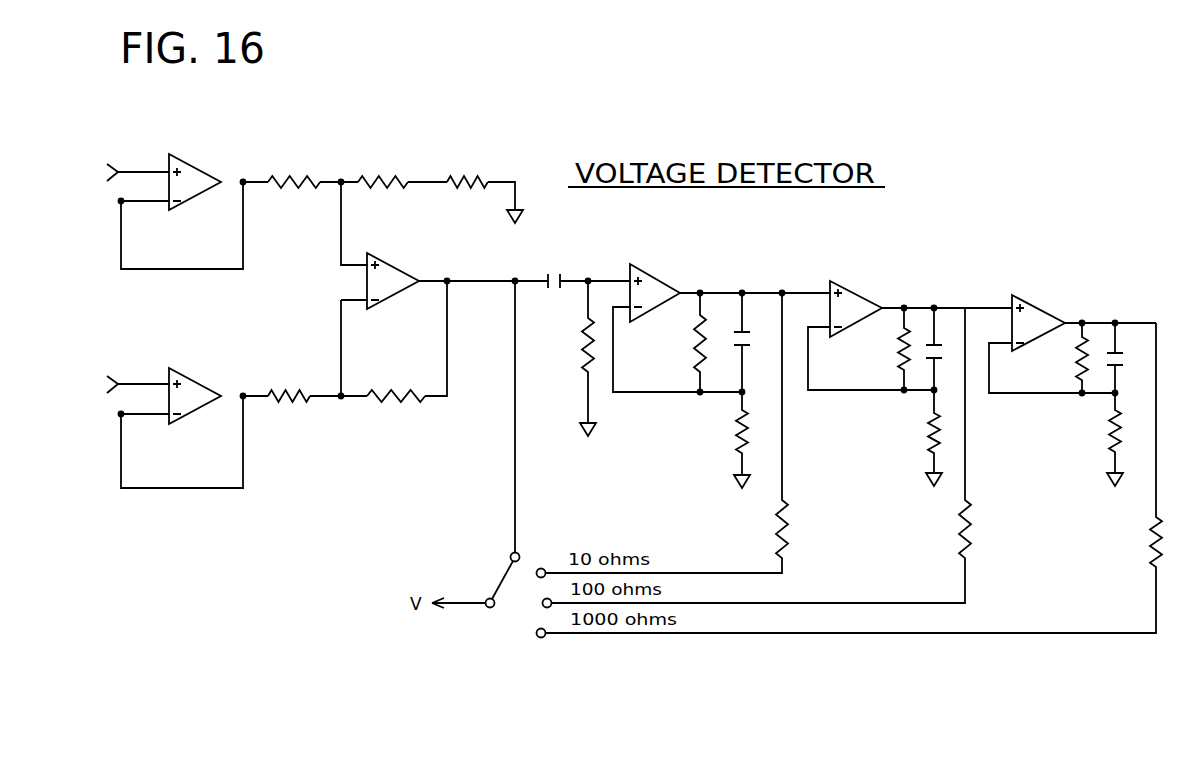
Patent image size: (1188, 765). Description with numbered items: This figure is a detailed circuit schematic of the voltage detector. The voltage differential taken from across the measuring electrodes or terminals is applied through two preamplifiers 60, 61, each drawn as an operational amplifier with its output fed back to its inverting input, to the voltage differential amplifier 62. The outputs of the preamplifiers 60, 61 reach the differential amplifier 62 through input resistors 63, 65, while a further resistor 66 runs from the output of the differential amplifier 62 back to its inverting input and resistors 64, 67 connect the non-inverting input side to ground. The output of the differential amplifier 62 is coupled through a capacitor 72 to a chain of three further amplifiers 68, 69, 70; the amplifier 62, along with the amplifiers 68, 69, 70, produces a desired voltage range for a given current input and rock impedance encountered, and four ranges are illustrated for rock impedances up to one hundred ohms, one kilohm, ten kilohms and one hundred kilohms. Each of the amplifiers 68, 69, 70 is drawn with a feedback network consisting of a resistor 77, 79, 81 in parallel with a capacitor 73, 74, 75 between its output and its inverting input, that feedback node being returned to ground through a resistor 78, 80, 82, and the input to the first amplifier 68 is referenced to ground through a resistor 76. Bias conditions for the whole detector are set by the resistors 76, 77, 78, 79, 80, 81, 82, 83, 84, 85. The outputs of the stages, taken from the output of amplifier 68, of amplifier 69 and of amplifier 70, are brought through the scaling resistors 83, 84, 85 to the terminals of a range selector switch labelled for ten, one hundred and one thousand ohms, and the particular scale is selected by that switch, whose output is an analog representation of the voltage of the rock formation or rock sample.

The preamplifier 60 is at (186, 160).
The preamplifier 61 is at (195, 380).
The voltage differential amplifier 62 is at (388, 266).
The resistor 63 is at (305, 177).
The resistor 64 is at (392, 182).
The resistor 65 is at (300, 398).
The resistor 66 is at (410, 398).
The resistor 67 is at (483, 182).
The amplifier 68 is at (660, 275).
The amplifier 69 is at (865, 300).
The amplifier 70 is at (1043, 309).
The coupling capacitor 72 is at (565, 279).
The capacitor 73 is at (745, 330).
The capacitor 74 is at (933, 338).
The capacitor 75 is at (1118, 365).
The resistor 76 is at (583, 322).
The resistor 77 is at (697, 328).
The resistor 78 is at (737, 430).
The resistor 79 is at (897, 338).
The resistor 80 is at (937, 432).
The resistor 81 is at (1080, 368).
The resistor 82 is at (1110, 432).
The resistor 83 is at (777, 520).
The resistor 84 is at (958, 520).
The resistor 85 is at (1150, 540).